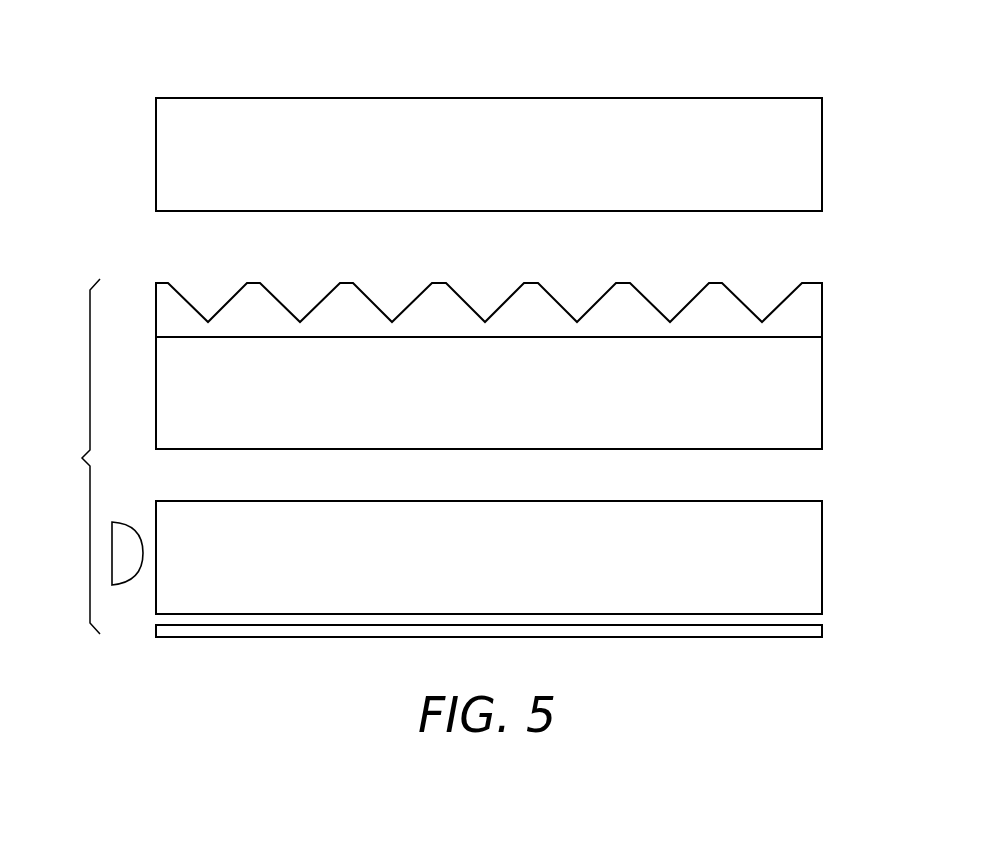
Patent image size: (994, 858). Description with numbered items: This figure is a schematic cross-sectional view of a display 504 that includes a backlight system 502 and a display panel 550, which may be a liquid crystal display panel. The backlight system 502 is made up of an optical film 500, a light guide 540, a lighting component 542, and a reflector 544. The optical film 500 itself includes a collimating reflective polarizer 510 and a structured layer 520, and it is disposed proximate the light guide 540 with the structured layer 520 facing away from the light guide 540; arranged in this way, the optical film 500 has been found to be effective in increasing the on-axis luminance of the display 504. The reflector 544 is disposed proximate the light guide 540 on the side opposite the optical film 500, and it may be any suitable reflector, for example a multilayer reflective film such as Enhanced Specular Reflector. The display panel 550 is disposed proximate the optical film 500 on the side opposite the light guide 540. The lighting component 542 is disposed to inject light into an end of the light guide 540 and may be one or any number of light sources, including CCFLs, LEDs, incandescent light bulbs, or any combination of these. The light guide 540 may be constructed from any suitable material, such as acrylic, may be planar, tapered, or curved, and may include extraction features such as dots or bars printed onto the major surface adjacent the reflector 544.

The display 504 is at (80, 88).
The display panel 550 is at (822, 151).
The structured layer 520 is at (822, 308).
The collimating reflective polarizer 510 is at (822, 372).
The optical film 500 is at (532, 366).
The light guide 540 is at (822, 557).
The reflector 544 is at (822, 630).
The lighting component 542 is at (118, 585).
The backlight system 502 is at (67, 456).